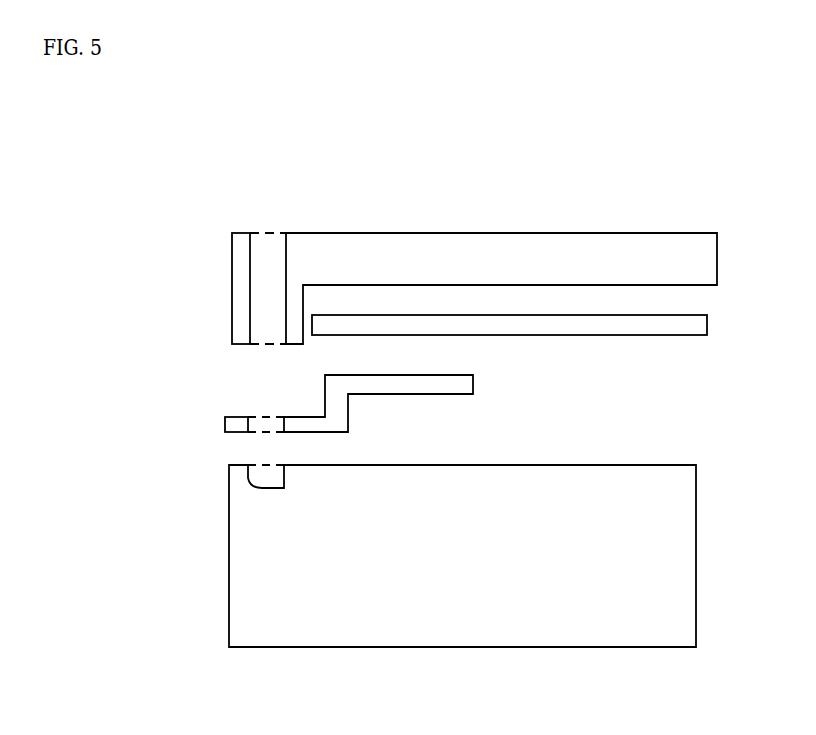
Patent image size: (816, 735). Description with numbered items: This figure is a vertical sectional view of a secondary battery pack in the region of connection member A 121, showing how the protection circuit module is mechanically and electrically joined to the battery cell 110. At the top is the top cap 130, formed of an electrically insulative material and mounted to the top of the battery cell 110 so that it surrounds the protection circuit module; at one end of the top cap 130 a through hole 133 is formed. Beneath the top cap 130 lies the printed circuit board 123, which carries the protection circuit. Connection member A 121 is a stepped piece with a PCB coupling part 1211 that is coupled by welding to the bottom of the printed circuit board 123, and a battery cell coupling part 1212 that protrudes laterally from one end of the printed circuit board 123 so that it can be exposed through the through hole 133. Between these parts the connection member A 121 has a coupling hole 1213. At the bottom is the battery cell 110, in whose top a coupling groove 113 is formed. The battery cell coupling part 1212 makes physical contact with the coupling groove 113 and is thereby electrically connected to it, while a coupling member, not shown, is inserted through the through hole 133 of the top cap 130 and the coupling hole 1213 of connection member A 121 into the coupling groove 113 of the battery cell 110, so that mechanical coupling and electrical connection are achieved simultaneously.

The battery cell 110 is at (386, 528).
The coupling groove 113 is at (226, 448).
The connection member A 121 is at (375, 404).
The PCB coupling part 1211 is at (458, 385).
The battery cell coupling part 1212 is at (230, 422).
The coupling hole 1213 is at (270, 428).
The printed circuit board 123 is at (598, 327).
The top cap 130 is at (392, 302).
The through hole 133 is at (272, 250).